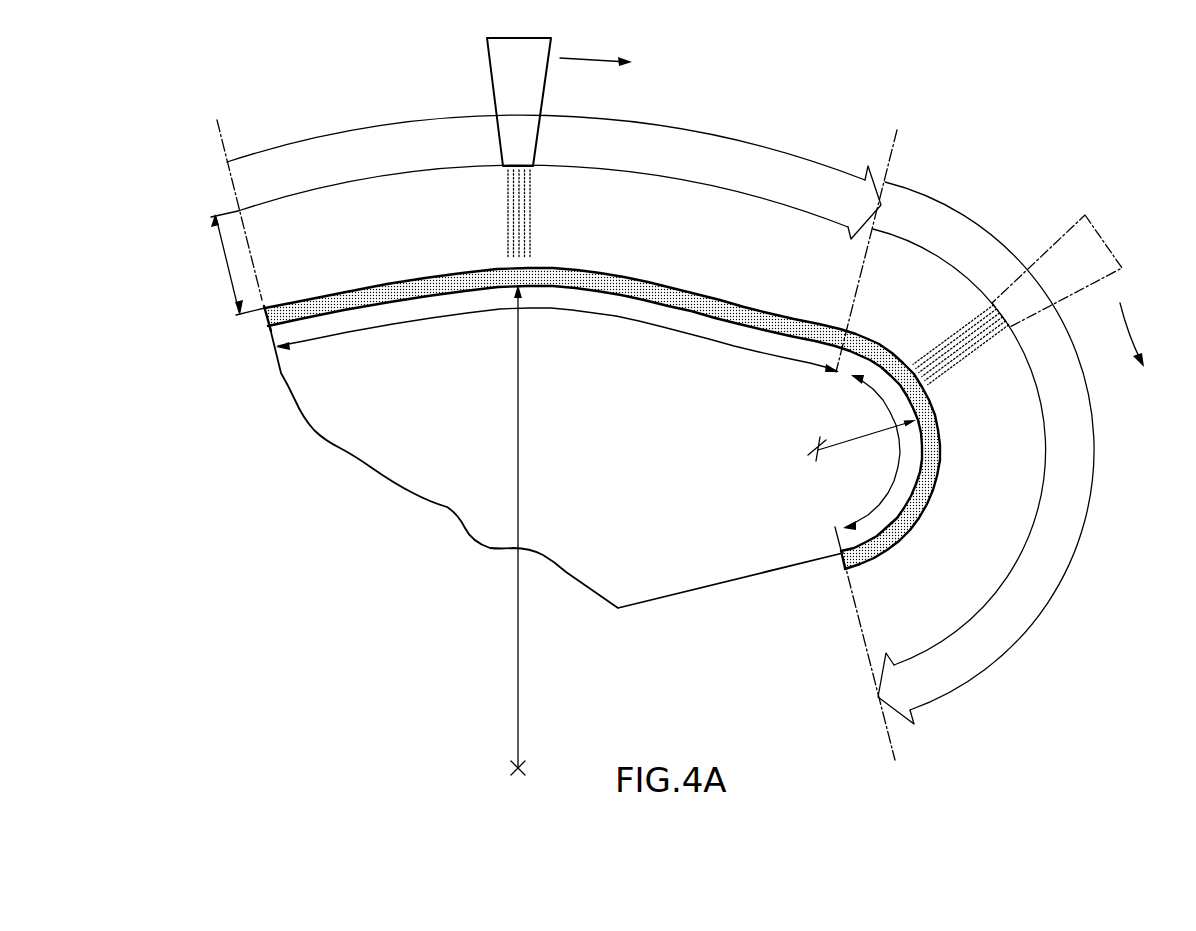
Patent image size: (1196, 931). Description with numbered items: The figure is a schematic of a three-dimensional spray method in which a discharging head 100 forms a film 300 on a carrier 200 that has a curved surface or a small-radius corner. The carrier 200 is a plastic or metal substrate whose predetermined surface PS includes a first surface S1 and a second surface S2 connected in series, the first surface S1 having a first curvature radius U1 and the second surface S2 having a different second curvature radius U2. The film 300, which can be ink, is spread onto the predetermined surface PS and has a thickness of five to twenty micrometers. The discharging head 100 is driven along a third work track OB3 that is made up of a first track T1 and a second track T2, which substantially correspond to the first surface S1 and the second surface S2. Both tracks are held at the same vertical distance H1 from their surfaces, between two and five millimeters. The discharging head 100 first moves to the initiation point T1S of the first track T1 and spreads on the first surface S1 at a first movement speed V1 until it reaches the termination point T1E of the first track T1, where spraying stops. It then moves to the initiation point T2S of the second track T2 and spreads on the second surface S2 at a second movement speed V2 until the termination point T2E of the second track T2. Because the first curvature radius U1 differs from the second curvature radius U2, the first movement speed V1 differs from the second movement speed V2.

The discharging head 100 is at (498, 77).
The carrier 200 is at (425, 478).
The film 300 is at (262, 320).
The predetermined surface PS is at (418, 280).
The first track T1 is at (712, 137).
The second track T2 is at (1085, 485).
The initiation point of the first track T1S is at (221, 126).
The termination point of the first track T1E is at (895, 138).
The initiation point of the second track T2S is at (898, 142).
The termination point of the second track T2E is at (886, 735).
The first movement speed V1 is at (596, 49).
The second movement speed V2 is at (1139, 335).
The vertical distance H1 is at (230, 263).
The first surface S1 is at (557, 340).
The second surface S2 is at (867, 466).
The first curvature radius U1 is at (531, 530).
The second curvature radius U2 is at (862, 436).
The third work track OB3 is at (1136, 66).